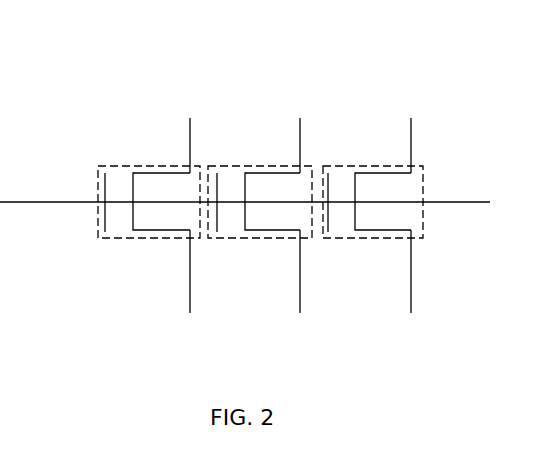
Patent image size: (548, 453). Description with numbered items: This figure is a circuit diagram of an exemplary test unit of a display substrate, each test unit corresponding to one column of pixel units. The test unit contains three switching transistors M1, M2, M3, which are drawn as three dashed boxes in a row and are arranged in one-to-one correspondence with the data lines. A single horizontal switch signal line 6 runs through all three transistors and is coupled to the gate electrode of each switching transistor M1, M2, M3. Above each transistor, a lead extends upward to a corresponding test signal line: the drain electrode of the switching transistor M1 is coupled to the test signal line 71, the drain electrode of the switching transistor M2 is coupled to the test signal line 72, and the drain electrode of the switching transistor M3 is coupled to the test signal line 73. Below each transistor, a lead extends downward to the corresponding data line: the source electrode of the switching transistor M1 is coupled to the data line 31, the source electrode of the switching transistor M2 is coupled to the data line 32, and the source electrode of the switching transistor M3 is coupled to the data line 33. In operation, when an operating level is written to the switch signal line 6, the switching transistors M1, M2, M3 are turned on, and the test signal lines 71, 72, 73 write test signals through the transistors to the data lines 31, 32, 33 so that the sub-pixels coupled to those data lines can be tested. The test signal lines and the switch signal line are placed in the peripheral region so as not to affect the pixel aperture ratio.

The switch signal line 6 is at (48, 202).
The switching transistor M1 is at (148, 240).
The switching transistor M2 is at (263, 240).
The switching transistor M3 is at (385, 240).
The test signal line 71 is at (190, 140).
The test signal line 72 is at (300, 140).
The test signal line 73 is at (411, 140).
The data line 31 is at (189, 290).
The data line 32 is at (299, 290).
The data line 33 is at (410, 290).